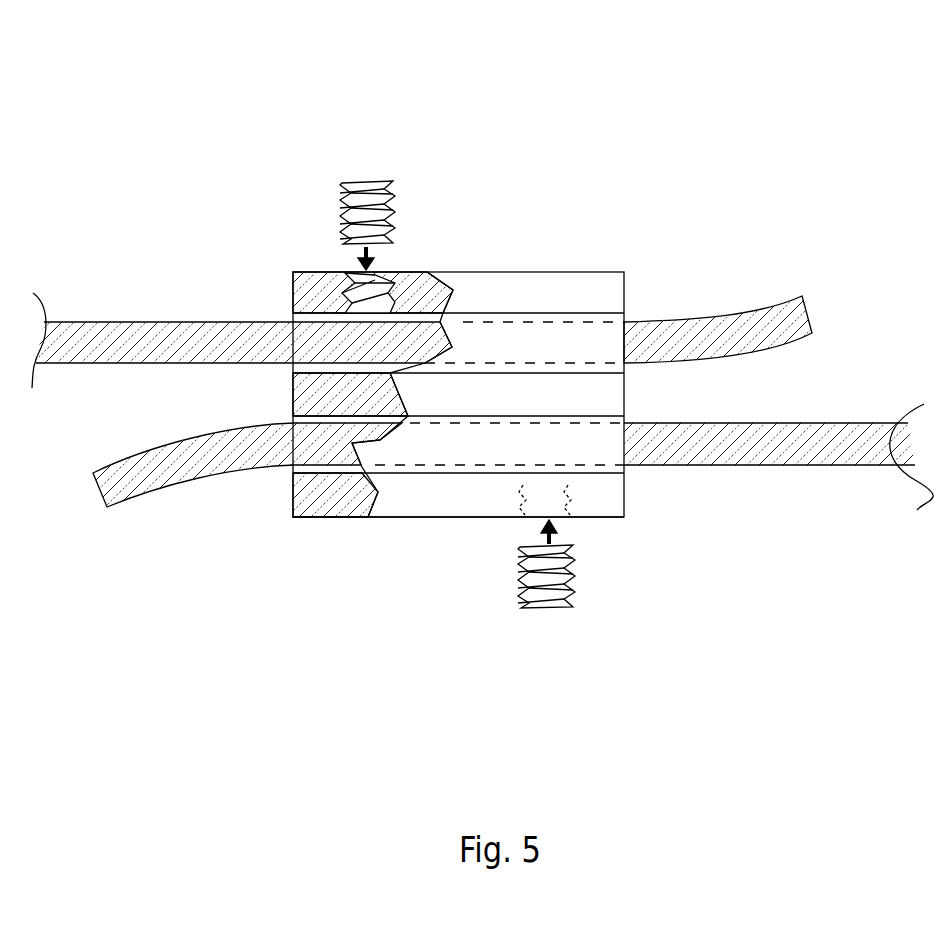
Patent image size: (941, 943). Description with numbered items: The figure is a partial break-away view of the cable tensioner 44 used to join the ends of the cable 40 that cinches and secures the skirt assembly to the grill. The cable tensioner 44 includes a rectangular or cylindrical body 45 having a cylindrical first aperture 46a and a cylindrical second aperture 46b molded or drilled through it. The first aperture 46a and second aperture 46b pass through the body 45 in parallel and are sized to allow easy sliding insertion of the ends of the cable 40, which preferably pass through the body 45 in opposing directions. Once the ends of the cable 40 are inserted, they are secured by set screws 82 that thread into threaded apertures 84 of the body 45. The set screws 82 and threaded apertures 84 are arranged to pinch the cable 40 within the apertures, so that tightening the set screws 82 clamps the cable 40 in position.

The cable 40 is at (214, 453).
The cable tensioner 44 is at (574, 262).
The body 45 is at (456, 518).
The first aperture 46a is at (330, 312).
The second aperture 46b is at (334, 474).
The set screws 82 is at (368, 182).
The threaded apertures 84 is at (363, 292).